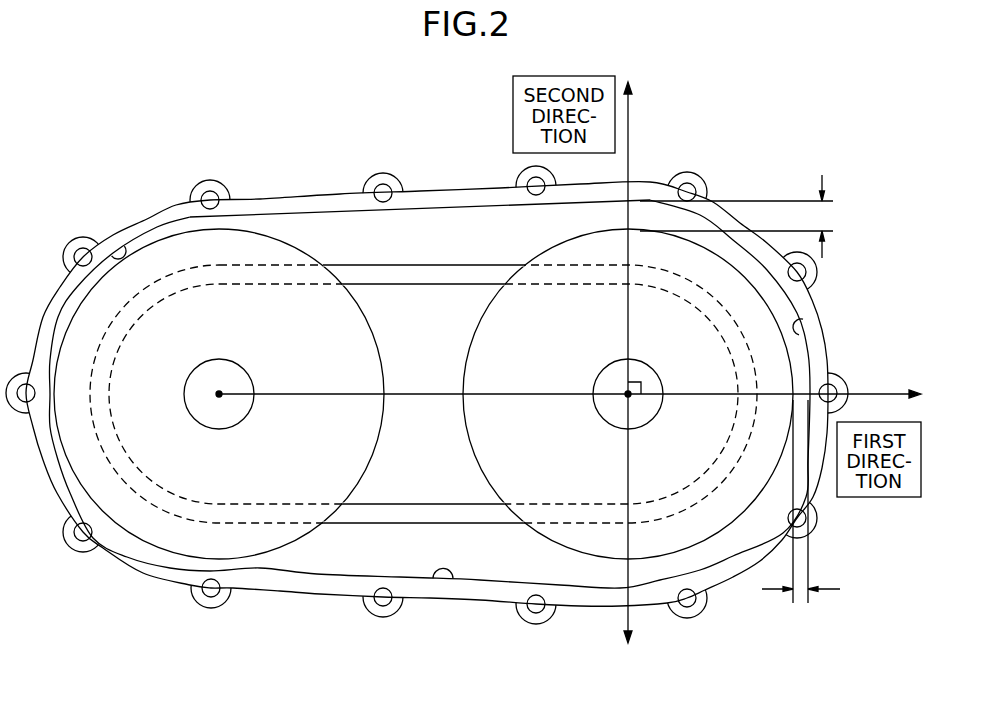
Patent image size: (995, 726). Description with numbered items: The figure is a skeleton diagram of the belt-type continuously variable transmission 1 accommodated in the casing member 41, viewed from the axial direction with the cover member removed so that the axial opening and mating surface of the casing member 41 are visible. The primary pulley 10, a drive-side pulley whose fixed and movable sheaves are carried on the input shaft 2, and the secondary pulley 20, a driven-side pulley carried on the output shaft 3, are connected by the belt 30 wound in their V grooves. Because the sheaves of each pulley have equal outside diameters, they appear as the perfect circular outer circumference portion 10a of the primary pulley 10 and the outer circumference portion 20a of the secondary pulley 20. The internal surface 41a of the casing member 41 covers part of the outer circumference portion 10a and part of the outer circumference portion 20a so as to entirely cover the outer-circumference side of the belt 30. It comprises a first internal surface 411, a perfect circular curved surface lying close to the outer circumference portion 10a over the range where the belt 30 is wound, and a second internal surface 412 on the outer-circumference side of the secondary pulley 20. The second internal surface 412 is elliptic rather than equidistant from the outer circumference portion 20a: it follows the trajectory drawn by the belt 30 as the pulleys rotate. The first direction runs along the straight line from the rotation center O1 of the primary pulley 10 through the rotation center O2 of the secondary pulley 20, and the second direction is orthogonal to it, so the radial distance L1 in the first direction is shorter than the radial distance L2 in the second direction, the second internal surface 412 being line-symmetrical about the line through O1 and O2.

The belt-type continuously variable transmission 1 is at (246, 122).
The input shaft 2 is at (193, 421).
The output shaft 3 is at (657, 418).
The primary pulley 10 is at (290, 233).
The outer circumference portion of the primary pulley 10a is at (175, 556).
The secondary pulley 20 is at (517, 253).
The outer circumference portion of the secondary pulley 20a is at (650, 557).
The belt 30 is at (423, 260).
The casing member 41 is at (166, 203).
The internal surface 41a is at (443, 580).
The first internal surface 411 is at (116, 254).
The second internal surface 412 is at (801, 327).
The rotation center axis of the primary pulley O1 is at (222, 397).
The rotation center axis of the secondary pulley O2 is at (625, 396).
The radial distance in the first direction L1 is at (801, 512).
The radial distance in the second direction L2 is at (750, 216).